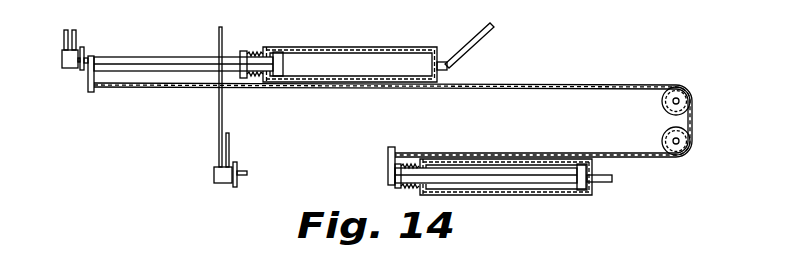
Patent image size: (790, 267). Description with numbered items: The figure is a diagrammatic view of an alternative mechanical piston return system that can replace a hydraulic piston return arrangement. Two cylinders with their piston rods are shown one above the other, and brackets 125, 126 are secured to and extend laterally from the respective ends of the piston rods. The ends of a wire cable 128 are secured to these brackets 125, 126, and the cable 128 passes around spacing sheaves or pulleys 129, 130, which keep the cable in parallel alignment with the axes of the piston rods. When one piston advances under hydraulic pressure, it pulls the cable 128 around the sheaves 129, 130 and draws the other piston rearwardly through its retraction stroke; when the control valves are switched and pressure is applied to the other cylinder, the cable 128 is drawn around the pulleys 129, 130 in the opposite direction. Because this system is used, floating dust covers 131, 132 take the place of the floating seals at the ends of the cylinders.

The bracket 125 is at (90, 89).
The bracket 126 is at (388, 160).
The wire cable 128 is at (537, 89).
The spacing sheave 129 is at (692, 80).
The spacing sheave 130 is at (678, 156).
The floating dust cover 131 is at (255, 52).
The floating dust cover 132 is at (412, 188).